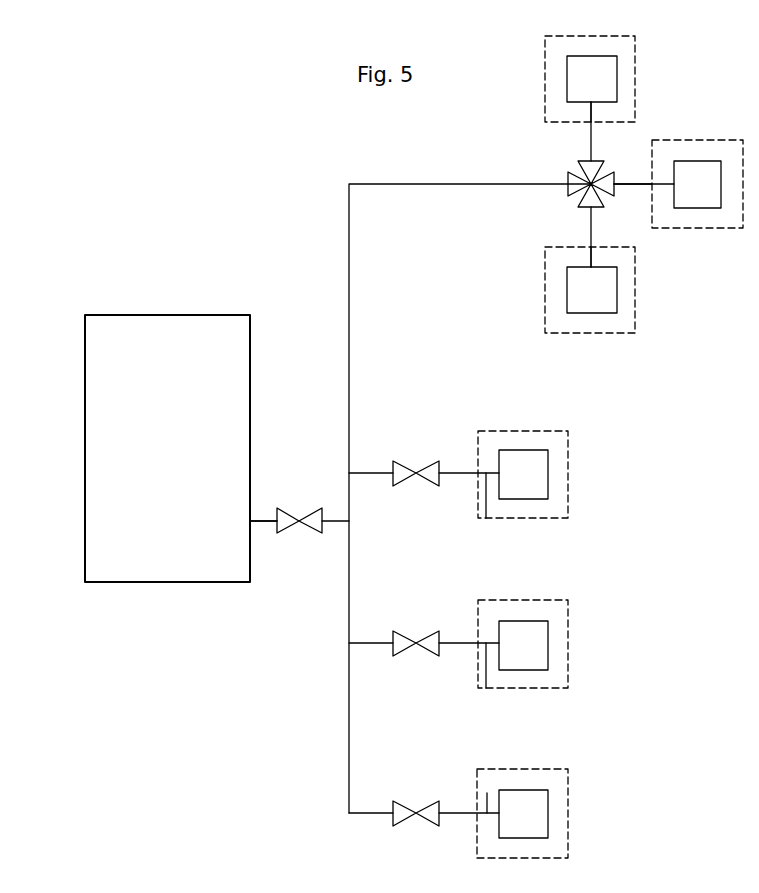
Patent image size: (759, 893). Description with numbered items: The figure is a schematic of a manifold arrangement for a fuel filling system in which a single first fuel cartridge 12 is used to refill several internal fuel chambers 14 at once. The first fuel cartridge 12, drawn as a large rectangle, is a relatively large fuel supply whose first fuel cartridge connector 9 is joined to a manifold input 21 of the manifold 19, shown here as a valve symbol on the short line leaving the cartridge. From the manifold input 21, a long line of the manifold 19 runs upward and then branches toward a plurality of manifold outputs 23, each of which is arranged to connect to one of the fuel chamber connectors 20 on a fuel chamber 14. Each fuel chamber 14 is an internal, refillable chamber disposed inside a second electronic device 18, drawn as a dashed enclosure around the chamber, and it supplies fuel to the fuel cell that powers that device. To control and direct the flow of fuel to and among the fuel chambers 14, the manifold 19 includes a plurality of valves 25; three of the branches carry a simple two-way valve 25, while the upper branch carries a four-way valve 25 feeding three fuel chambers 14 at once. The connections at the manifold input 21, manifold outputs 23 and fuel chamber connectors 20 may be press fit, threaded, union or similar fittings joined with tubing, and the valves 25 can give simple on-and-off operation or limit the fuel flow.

The first fuel cartridge 12 is at (167, 582).
The first fuel cartridge connector 9 is at (261, 519).
The manifold input 21 is at (287, 534).
The manifold 19 is at (386, 183).
The valve 25 is at (583, 171).
The manifold output 23 is at (591, 130).
The fuel chamber connector 20 is at (591, 109).
The second electronic device 18 is at (545, 97).
The internal fuel chamber 14 is at (567, 62).